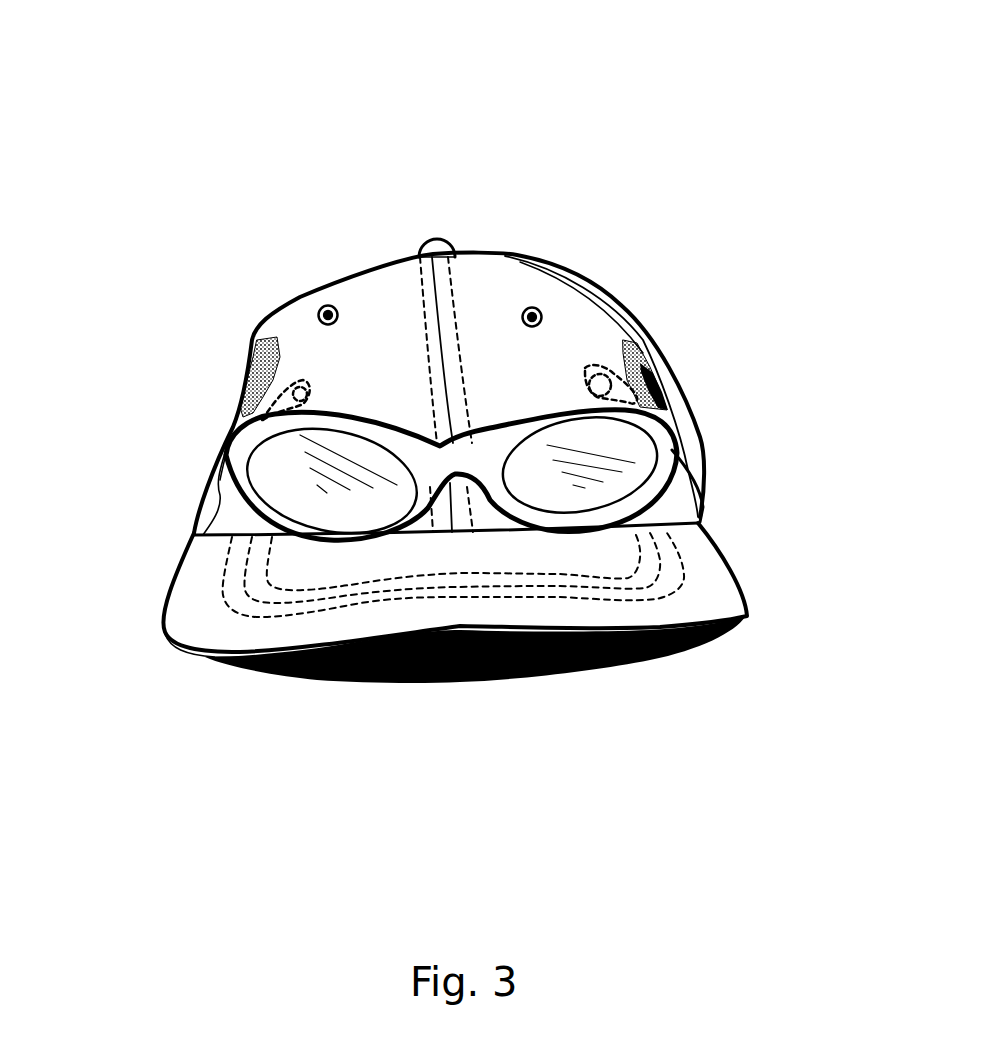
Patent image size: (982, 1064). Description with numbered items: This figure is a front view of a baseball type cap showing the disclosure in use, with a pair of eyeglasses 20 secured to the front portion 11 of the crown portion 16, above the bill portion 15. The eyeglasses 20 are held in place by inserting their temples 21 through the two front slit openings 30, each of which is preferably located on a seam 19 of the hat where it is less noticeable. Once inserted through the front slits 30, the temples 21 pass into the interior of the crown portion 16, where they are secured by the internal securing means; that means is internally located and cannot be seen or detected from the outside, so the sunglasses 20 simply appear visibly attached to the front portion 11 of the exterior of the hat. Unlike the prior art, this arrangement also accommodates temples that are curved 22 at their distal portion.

The front portion 11 is at (545, 362).
The bill portion 15 is at (593, 553).
The crown portion 16 is at (483, 255).
The seam 19 is at (243, 423).
The eyeglasses 20 is at (660, 437).
The temple 21 is at (287, 410).
The curved temple portion 22 is at (302, 387).
The front slit opening 30 is at (250, 403).